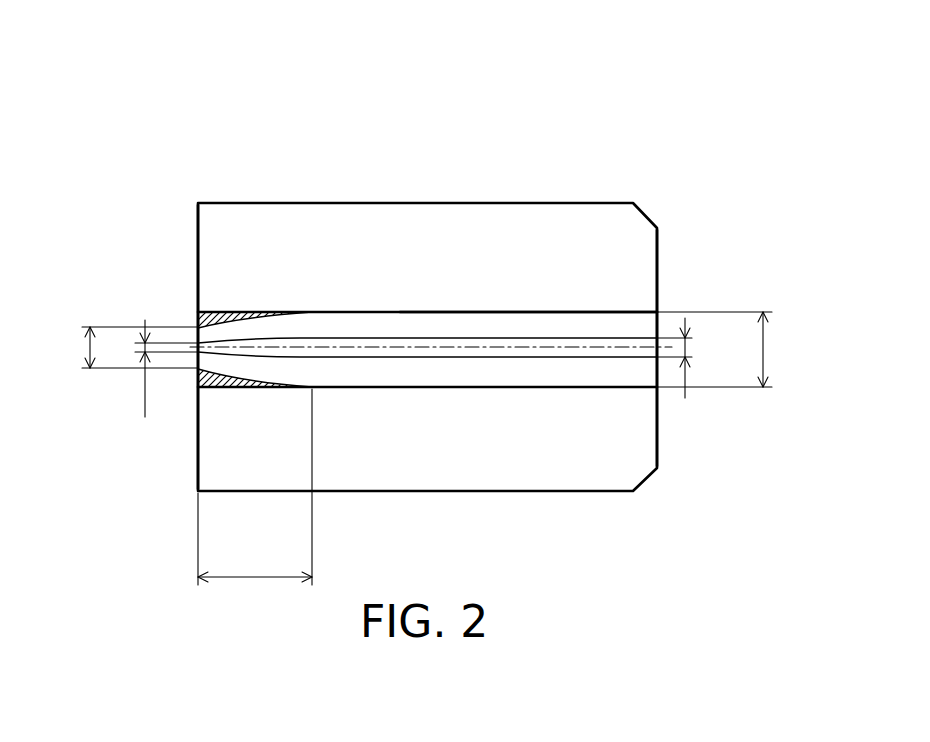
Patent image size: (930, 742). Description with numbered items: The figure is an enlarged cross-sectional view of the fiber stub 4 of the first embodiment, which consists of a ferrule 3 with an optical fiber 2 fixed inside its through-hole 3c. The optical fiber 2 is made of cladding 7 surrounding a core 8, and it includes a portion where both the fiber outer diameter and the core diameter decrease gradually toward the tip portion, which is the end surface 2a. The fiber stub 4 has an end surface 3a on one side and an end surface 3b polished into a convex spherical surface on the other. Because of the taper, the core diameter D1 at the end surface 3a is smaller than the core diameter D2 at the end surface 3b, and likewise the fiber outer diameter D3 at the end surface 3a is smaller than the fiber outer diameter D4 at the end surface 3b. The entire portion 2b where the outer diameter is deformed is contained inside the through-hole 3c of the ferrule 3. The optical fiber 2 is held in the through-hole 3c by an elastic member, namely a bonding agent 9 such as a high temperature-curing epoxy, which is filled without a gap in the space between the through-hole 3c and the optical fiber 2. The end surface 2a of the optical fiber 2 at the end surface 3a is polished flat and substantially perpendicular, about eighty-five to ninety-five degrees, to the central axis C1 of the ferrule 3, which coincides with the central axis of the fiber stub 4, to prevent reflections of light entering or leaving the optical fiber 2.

The optical fiber 2 is at (617, 137).
The end surface 2a is at (197, 347).
The portion where the outer diameter is deformed 2b is at (255, 487).
The ferrule 3 is at (352, 252).
The end surface 3a is at (196, 243).
The end surface 3b is at (660, 270).
The through-hole 3c is at (660, 311).
The fiber stub 4 is at (662, 95).
The cladding 7 is at (498, 323).
The core 8 is at (548, 345).
The elastic member (bonding agent) 9 is at (217, 387).
The central axis C1 is at (613, 352).
The core diameter D1 is at (151, 368).
The core diameter D2 is at (694, 358).
The fiber outer diameter D3 is at (119, 347).
The fiber outer diameter D4 is at (732, 349).